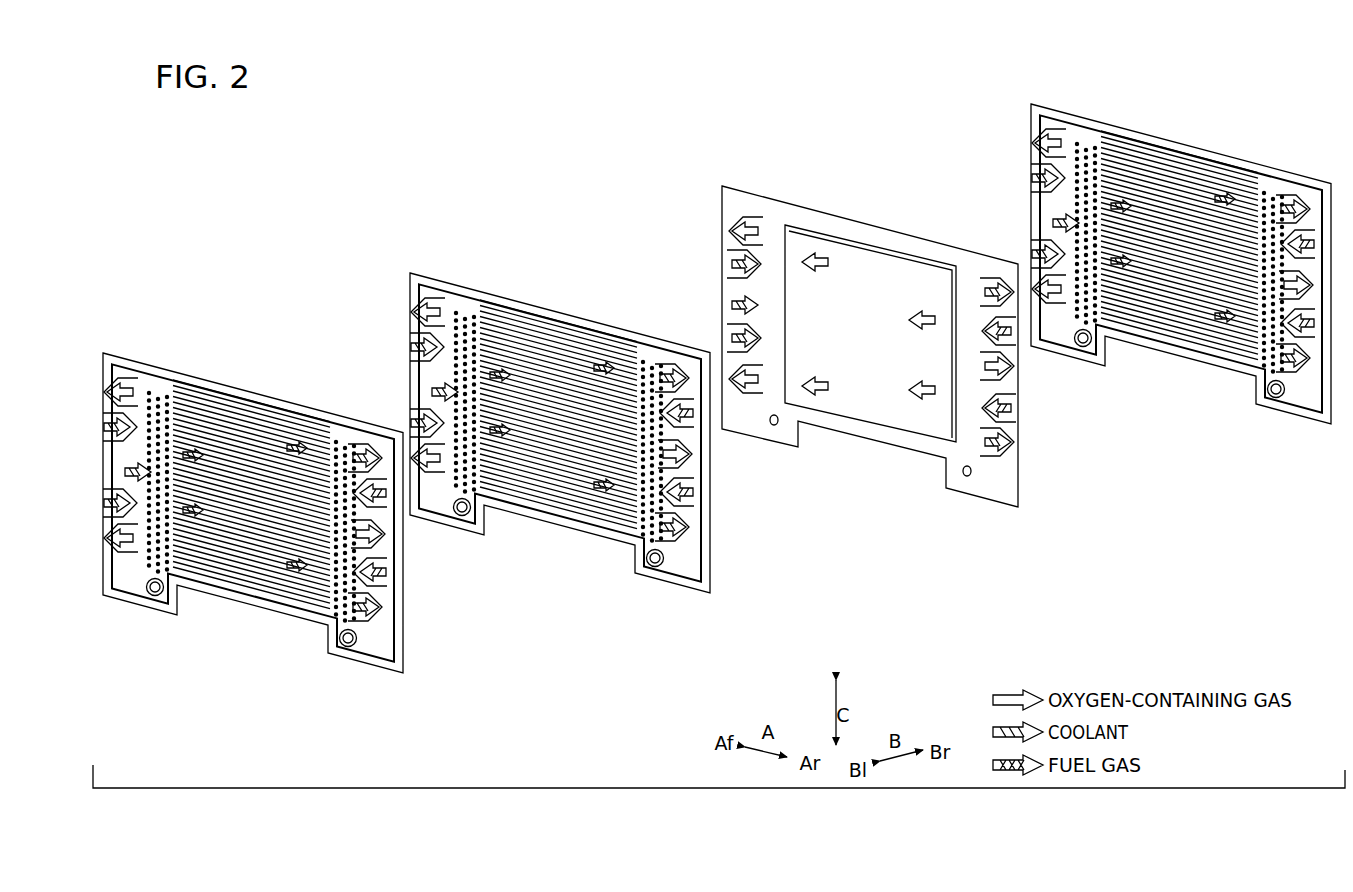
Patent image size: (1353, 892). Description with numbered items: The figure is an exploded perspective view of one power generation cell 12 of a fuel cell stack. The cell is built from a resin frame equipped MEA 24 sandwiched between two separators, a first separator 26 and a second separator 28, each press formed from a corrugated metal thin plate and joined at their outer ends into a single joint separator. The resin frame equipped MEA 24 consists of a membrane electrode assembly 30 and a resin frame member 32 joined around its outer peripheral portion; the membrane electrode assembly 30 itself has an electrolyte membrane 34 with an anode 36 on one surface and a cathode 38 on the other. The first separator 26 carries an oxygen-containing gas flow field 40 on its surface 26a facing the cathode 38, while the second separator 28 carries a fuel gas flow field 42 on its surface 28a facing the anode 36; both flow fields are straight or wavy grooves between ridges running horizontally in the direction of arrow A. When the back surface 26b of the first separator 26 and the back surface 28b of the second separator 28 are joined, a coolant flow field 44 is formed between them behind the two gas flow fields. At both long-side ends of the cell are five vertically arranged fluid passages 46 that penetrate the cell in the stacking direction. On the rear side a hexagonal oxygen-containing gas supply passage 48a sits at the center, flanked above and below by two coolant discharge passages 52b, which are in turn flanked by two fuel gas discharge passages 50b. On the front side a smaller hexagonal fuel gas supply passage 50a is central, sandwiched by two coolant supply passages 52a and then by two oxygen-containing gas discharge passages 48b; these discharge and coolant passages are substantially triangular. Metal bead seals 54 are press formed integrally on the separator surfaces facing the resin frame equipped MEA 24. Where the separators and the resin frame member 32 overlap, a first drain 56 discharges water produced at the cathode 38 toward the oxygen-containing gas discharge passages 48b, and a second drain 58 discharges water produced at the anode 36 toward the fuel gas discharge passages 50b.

The power generation cell 12 is at (687, 180).
The resin frame equipped MEA 24 is at (794, 130).
The first separator 26 is at (408, 270).
The surface of first separator 26a is at (703, 597).
The surface of first separator 26b is at (685, 572).
The second separator 28 is at (205, 375).
The surface of second separator 28a is at (380, 660).
The surface of second separator 28b is at (393, 650).
The membrane electrode assembly 30 is at (859, 238).
The resin frame member 32 is at (786, 214).
The electrolyte membrane 34 is at (885, 416).
The anode 36 is at (826, 231).
The cathode 38 is at (863, 408).
The oxygen-containing gas flow field 40 is at (583, 365).
The fuel gas flow field 42 is at (243, 585).
The coolant flow field 44 is at (543, 355).
The fluid passages 46 is at (372, 637).
The oxygen-containing gas supply passage 48a is at (403, 563).
The oxygen-containing gas discharge passages 48b is at (124, 385).
The fuel gas supply passage 50a is at (152, 488).
The fuel gas discharge passages 50b is at (368, 455).
The coolant supply passages 52a is at (135, 425).
The coolant discharge passages 52b is at (402, 597).
The seals 54 is at (1084, 150).
The first drain 56 is at (156, 603).
The second drain 58 is at (340, 641).